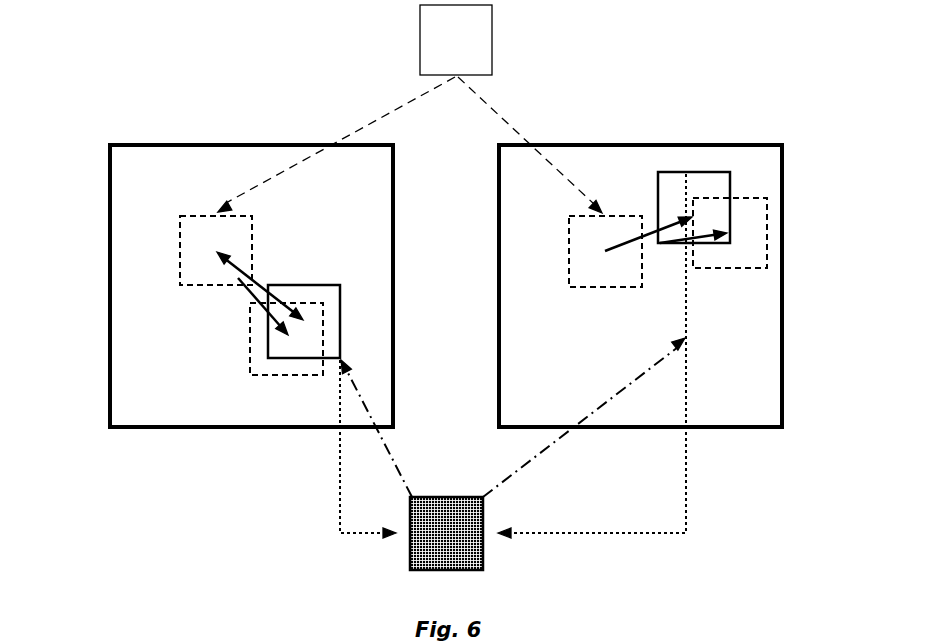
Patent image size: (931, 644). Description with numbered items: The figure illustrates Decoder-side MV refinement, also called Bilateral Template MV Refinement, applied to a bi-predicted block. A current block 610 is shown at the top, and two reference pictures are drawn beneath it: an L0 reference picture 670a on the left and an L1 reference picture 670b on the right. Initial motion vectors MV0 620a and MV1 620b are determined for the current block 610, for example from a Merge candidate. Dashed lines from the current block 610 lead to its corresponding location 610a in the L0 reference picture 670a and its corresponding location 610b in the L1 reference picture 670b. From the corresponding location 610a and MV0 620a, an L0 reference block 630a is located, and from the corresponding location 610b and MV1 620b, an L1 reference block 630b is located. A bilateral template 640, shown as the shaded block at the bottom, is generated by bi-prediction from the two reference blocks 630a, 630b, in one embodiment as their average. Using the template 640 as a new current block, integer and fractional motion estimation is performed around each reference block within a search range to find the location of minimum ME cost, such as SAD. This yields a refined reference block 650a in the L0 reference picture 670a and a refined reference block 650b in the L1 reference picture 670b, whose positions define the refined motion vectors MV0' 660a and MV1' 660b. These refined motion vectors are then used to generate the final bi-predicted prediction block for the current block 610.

The current block 610 is at (420, 40).
The corresponding location of the current block in L0 reference picture 610a is at (180, 242).
The corresponding location of the current block in L1 reference picture 610b is at (569, 250).
The initial motion vector MV0 620a is at (272, 282).
The initial motion vector MV1 620b is at (653, 241).
The L0 reference block 630a is at (340, 322).
The L1 reference block 630b is at (730, 188).
The bilateral template 640 is at (410, 557).
The refined reference block in L0 650a is at (258, 375).
The refined reference block in L1 650b is at (767, 250).
The refined motion vector MV0' 660a is at (253, 297).
The refined motion vector MV1' 660b is at (653, 242).
The L0 reference picture 670a is at (265, 145).
The L1 reference picture 670b is at (700, 145).